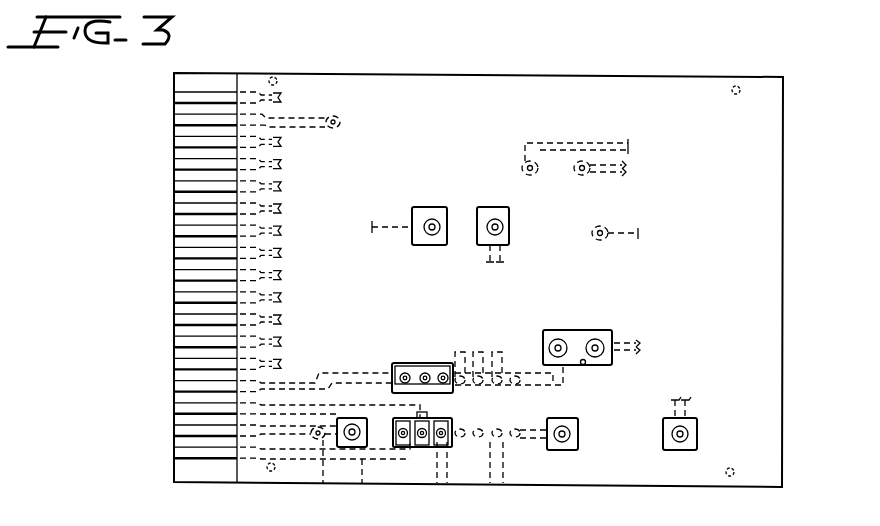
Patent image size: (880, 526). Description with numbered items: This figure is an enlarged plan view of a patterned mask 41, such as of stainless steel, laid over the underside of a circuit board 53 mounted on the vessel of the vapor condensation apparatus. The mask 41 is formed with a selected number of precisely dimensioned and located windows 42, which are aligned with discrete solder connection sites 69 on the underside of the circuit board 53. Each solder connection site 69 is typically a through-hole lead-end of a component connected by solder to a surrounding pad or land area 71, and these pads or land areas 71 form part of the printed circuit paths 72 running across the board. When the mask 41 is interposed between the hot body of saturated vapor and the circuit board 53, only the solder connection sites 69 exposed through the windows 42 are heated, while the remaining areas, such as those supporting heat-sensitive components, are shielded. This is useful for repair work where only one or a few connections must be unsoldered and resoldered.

The patterned mask 41 is at (786, 269).
The circuit board 53 is at (176, 226).
The windows 42 is at (480, 212).
The solder connection sites 69 is at (442, 373).
The pads or land areas 71 is at (578, 180).
The printed circuit paths 72 is at (352, 400).